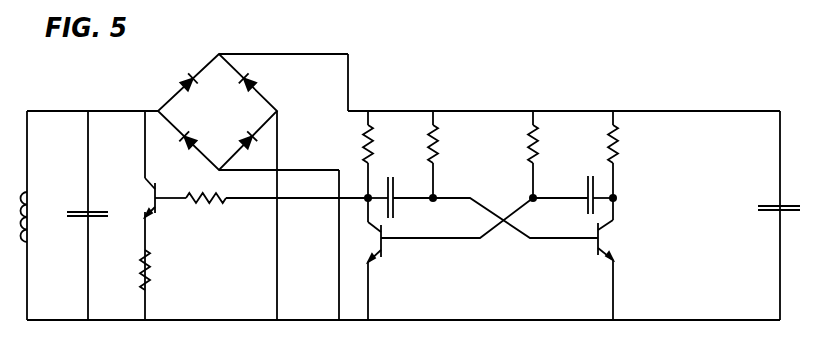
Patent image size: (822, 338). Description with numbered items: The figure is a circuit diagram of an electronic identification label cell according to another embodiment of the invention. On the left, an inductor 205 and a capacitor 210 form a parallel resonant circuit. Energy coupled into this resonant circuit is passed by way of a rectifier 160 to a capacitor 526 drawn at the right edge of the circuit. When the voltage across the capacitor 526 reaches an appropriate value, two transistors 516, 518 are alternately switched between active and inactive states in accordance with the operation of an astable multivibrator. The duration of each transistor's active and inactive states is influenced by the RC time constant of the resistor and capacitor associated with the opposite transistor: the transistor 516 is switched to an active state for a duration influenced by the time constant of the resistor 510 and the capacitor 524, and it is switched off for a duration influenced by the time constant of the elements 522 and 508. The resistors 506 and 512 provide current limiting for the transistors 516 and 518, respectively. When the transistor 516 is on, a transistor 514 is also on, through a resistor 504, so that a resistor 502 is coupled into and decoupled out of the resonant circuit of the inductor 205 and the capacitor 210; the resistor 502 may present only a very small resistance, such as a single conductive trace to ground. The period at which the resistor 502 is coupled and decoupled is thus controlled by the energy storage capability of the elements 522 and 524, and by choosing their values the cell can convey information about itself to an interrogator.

The rectifier 160 is at (192, 105).
The inductor 205 is at (45, 207).
The capacitor 210 is at (81, 228).
The resistor 502 is at (166, 270).
The resistor 504 is at (206, 212).
The resistor 506 is at (353, 144).
The capacitor 508 is at (454, 144).
The resistor 510 is at (515, 144).
The resistor 512 is at (634, 144).
The transistor 514 is at (131, 197).
The transistor 516 is at (394, 244).
The transistor 518 is at (623, 240).
The resistor 522 is at (404, 185).
The capacitor 524 is at (571, 192).
The capacitor 526 is at (764, 193).